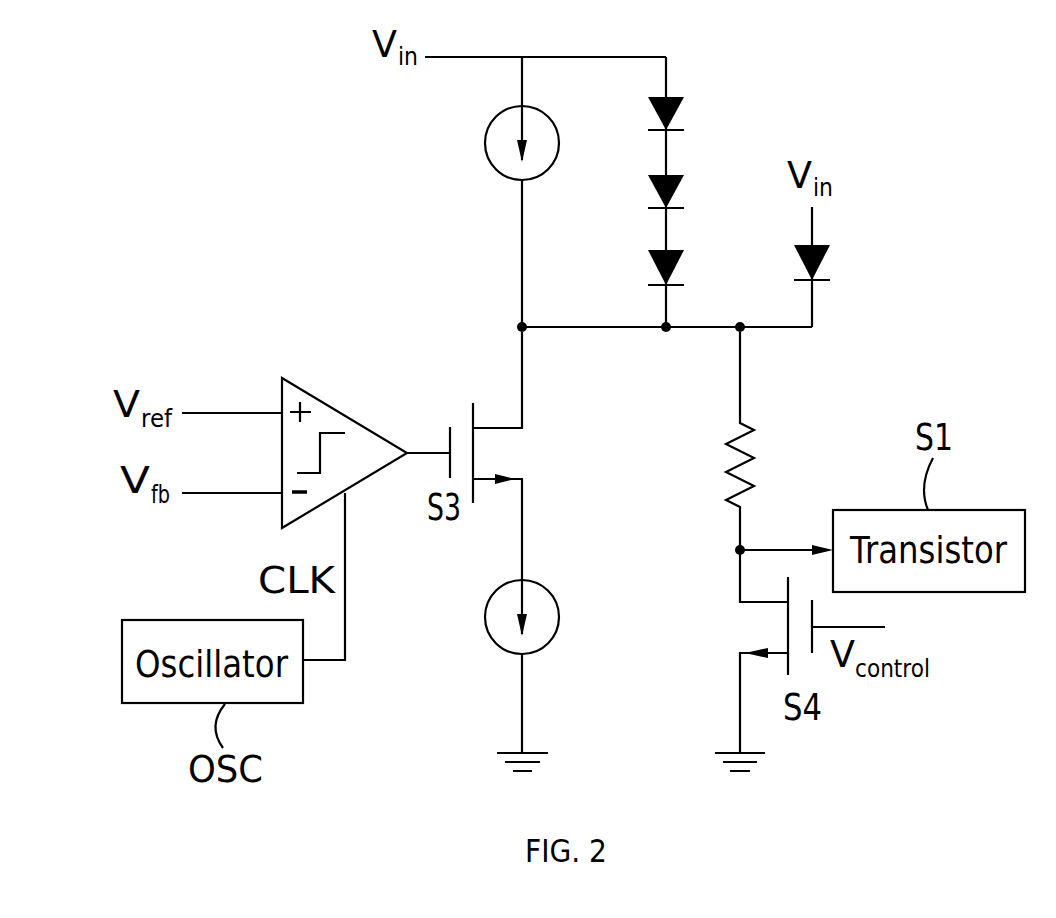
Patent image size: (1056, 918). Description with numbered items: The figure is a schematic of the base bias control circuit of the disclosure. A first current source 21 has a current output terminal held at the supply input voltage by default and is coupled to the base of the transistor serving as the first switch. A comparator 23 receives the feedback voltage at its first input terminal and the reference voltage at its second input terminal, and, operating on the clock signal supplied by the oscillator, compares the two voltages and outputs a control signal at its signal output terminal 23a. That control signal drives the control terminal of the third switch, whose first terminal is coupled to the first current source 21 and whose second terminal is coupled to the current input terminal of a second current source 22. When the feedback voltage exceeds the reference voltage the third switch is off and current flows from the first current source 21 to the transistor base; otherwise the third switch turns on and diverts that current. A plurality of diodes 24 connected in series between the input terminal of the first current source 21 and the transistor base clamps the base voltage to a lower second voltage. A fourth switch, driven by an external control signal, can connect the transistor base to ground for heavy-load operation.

The first current source 21 is at (485, 143).
The second current source 22 is at (485, 617).
The comparator 23 is at (342, 412).
The signal output terminal 23a is at (408, 452).
The plurality of diodes 24 is at (681, 104).